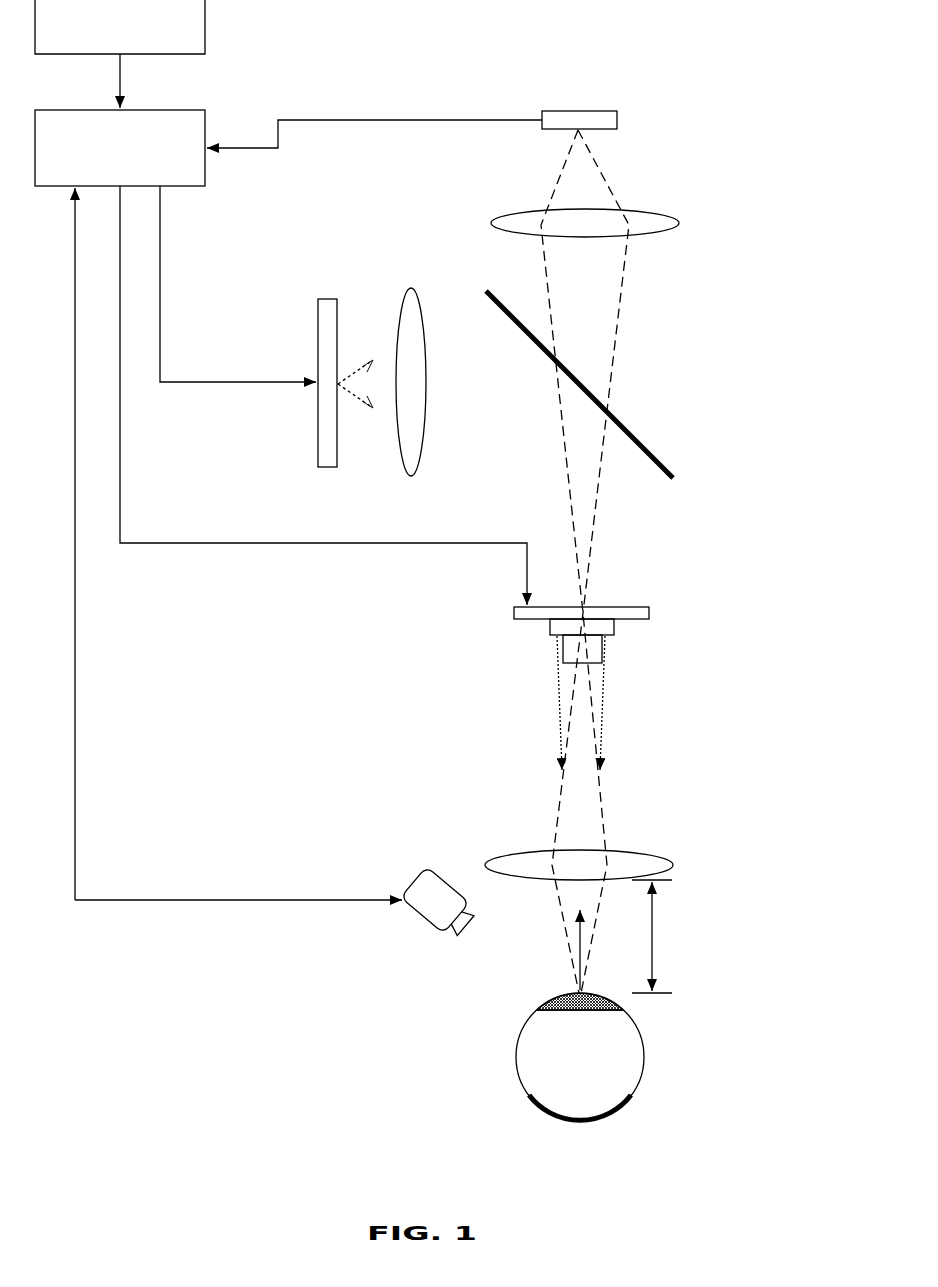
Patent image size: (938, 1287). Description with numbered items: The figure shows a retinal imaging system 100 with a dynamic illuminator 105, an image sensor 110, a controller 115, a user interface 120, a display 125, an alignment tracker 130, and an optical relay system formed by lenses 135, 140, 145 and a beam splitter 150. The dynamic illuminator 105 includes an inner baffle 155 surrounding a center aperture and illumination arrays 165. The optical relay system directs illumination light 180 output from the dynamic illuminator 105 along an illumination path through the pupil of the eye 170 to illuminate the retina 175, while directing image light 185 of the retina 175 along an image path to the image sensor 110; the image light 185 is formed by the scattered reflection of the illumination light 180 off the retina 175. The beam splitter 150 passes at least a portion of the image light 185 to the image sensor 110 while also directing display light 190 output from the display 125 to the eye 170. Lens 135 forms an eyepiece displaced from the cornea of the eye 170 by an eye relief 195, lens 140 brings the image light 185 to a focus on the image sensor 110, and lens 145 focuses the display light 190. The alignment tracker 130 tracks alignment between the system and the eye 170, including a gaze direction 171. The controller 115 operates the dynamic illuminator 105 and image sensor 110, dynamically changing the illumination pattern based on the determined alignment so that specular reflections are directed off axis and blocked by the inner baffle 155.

The retinal imaging system 100 is at (442, 588).
The dynamic illuminator 105 is at (661, 705).
The image sensor 110 is at (617, 118).
The controller 115 is at (135, 175).
The user interface 120 is at (180, 38).
The display 125 is at (320, 345).
The alignment tracker 130 is at (382, 852).
The lens 135 is at (672, 863).
The lens 140 is at (678, 222).
The lens 145 is at (411, 290).
The beam splitter 150 is at (672, 470).
The inner baffle 155 is at (566, 641).
The illumination arrays 165 is at (545, 623).
The eye 170 is at (596, 1066).
The gaze direction 171 is at (578, 942).
The retina 175 is at (592, 1121).
The illumination light 180 is at (603, 716).
The image light 185 is at (594, 512).
The display light 190 is at (358, 395).
The eye relief 195 is at (658, 942).